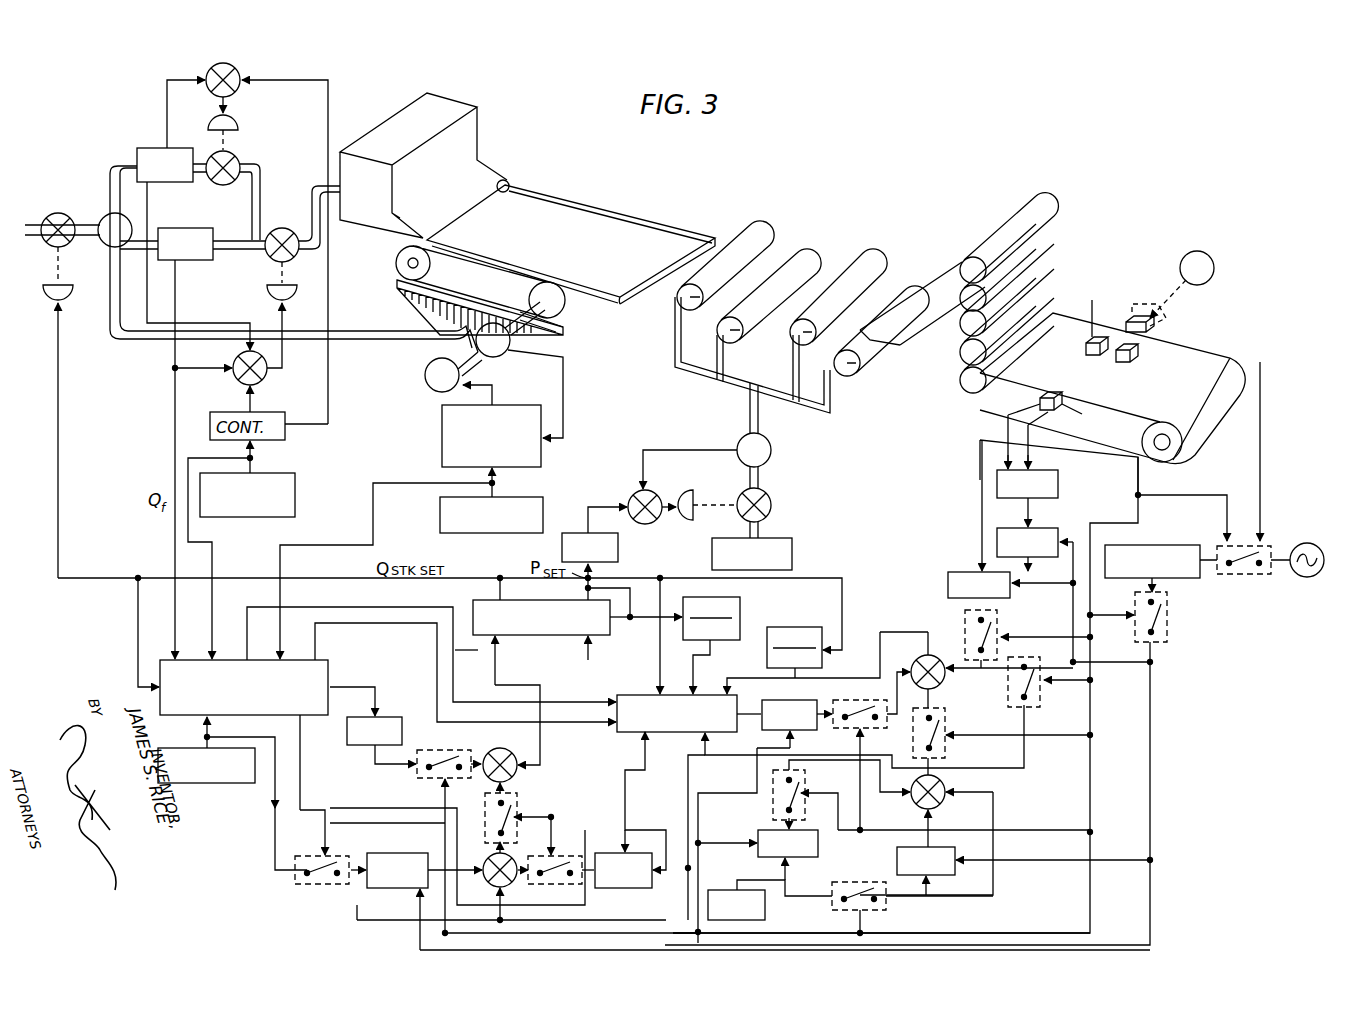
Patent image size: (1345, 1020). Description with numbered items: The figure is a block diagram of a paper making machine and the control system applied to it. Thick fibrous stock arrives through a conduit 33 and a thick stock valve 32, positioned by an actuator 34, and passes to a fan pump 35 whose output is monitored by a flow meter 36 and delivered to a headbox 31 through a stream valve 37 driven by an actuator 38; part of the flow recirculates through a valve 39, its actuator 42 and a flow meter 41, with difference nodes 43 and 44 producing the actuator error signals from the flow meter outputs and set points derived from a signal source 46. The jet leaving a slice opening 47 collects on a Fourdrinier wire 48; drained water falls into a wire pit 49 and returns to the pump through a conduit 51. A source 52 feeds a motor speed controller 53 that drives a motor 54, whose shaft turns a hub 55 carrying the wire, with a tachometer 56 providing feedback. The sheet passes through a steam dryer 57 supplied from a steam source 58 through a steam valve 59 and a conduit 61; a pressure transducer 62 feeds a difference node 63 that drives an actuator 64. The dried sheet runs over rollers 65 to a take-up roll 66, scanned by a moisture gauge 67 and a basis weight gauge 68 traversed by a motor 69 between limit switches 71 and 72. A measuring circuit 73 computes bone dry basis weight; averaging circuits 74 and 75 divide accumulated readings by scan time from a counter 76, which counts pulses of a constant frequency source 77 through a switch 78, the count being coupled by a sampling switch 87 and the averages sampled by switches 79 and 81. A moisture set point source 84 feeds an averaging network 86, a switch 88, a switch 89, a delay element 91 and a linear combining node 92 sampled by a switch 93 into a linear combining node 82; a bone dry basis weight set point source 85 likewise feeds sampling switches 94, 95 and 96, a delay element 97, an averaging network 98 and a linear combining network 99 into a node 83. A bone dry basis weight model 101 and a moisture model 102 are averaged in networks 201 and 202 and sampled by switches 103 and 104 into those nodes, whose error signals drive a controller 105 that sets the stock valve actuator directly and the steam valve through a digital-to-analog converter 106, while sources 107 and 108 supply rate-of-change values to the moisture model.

The headbox 31 is at (423, 165).
The thick stock valve 32 is at (62, 212).
The conduit 33 is at (25, 232).
The actuator 34 is at (66, 284).
The fan pump 35 is at (102, 213).
The flow meter 36 is at (198, 228).
The stream valve 37 is at (266, 258).
The actuator 38 is at (268, 290).
The valve 39 is at (238, 154).
The flow meter 41 is at (152, 147).
The actuator 42 is at (233, 118).
The difference node 43 is at (236, 382).
The difference node 44 is at (238, 74).
The signal source 46 is at (296, 498).
The slice opening 47 is at (507, 182).
The Fourdrinier wire 48 is at (512, 272).
The wire pit 49 is at (445, 312).
The conduit 51 is at (374, 340).
The source 52 is at (530, 498).
The motor speed controller 53 is at (440, 443).
The motor 54 is at (428, 388).
The hub 55 is at (574, 318).
The tachometer 56 is at (497, 356).
The steam dryer 57 is at (846, 228).
The steam source 58 is at (782, 538).
The steam valve 59 is at (773, 502).
The conduit 61 is at (762, 422).
The pressure transducer 62 is at (768, 458).
The difference node 63 is at (636, 493).
The actuator 64 is at (688, 492).
The rollers 65 is at (1020, 190).
The take-up roll 66 is at (1232, 422).
The moisture gauge 67 is at (1093, 318).
The basis weight gauge 68 is at (1130, 360).
The motor 69 is at (1215, 262).
The limit switch 71 is at (1158, 326).
The limit switch 72 is at (1075, 410).
The measuring circuit 73 is at (1060, 492).
The averaging circuit 74 is at (962, 571).
The averaging circuit 75 is at (1056, 528).
The counter 76 is at (1178, 545).
The constant frequency source 77 is at (1312, 544).
The switch 78 is at (1246, 582).
The sampling switch 79 is at (960, 630).
The sampling switch 81 is at (1042, 696).
The linear combining node 82 is at (938, 682).
The linear combining node 83 is at (492, 750).
The moisture set point source 84 is at (766, 904).
The bone dry basis weight set point source 85 is at (224, 784).
The averaging network 86 is at (750, 843).
The sampling switch 87 is at (1172, 624).
The switch 88 is at (770, 807).
The switch 89 is at (884, 904).
The delay element 91 is at (895, 870).
The linear combining node 92 is at (940, 800).
The sampling switch 93 is at (946, 716).
The sampling switch 94 is at (328, 885).
The sampling switch 95 is at (562, 856).
The sampling switch 96 is at (514, 800).
The delay element 97 is at (378, 888).
The averaging network 98 is at (606, 889).
The linear combining network 99 is at (508, 884).
The bone dry basis weight model 101 is at (330, 668).
The moisture model 102 is at (696, 733).
The sampling switch 103 is at (417, 778).
The sampling switch 104 is at (868, 730).
The controller 105 is at (560, 636).
The digital-to-analog converter 106 is at (620, 548).
The source 107 is at (742, 600).
The source 108 is at (823, 660).
The averaging network 201 is at (364, 746).
The averaging network 202 is at (802, 731).